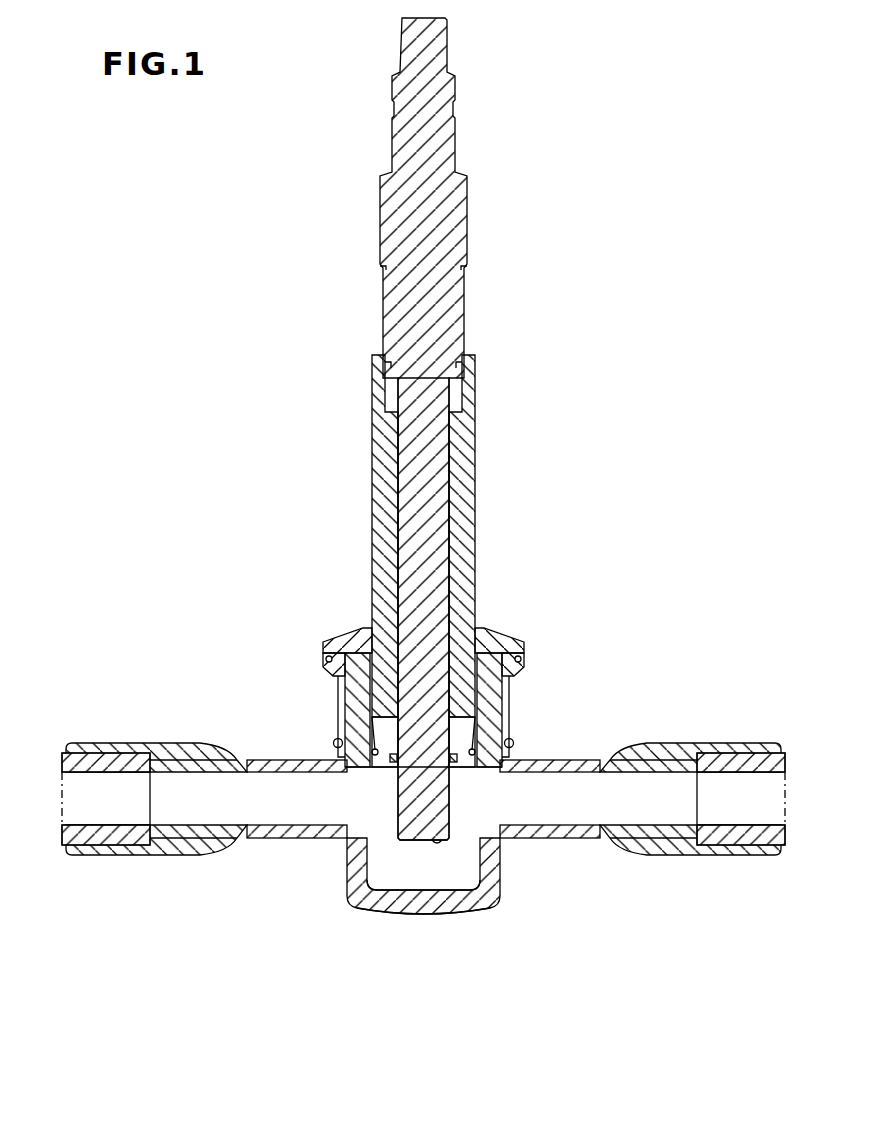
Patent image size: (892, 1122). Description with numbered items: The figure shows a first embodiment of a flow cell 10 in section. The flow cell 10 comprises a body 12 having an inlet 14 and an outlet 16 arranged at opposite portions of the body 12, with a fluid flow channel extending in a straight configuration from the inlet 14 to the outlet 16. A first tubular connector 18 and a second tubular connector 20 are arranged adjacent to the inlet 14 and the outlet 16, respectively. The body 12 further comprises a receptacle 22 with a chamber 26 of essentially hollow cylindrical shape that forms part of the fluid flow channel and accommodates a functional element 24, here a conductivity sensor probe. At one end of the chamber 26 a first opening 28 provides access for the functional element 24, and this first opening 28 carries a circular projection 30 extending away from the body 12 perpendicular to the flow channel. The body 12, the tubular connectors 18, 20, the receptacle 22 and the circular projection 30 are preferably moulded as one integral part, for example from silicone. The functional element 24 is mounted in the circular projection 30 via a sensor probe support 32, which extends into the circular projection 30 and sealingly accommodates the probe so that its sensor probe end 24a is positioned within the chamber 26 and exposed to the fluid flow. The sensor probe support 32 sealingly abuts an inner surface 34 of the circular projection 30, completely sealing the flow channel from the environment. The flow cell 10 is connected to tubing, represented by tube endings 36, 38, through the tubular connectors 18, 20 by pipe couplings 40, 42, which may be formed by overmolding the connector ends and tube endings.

The flow cell 10 is at (630, 335).
The body 12 is at (293, 680).
The inlet 14 is at (423, 850).
The outlet 16 is at (477, 778).
The first tubular connector 18 is at (263, 838).
The second tubular connector 20 is at (583, 838).
The receptacle 22 is at (432, 945).
The functional element 24 is at (493, 430).
The sensor probe end 24a is at (450, 803).
The chamber 26 is at (435, 897).
The first opening 28 is at (358, 786).
The circular projection 30 is at (467, 652).
The sensor probe support 32 is at (403, 574).
The inner surface 34 is at (370, 677).
The tube ending 36 is at (107, 767).
The tube ending 38 is at (750, 766).
The pipe coupling 40 is at (157, 850).
The pipe coupling 42 is at (690, 848).